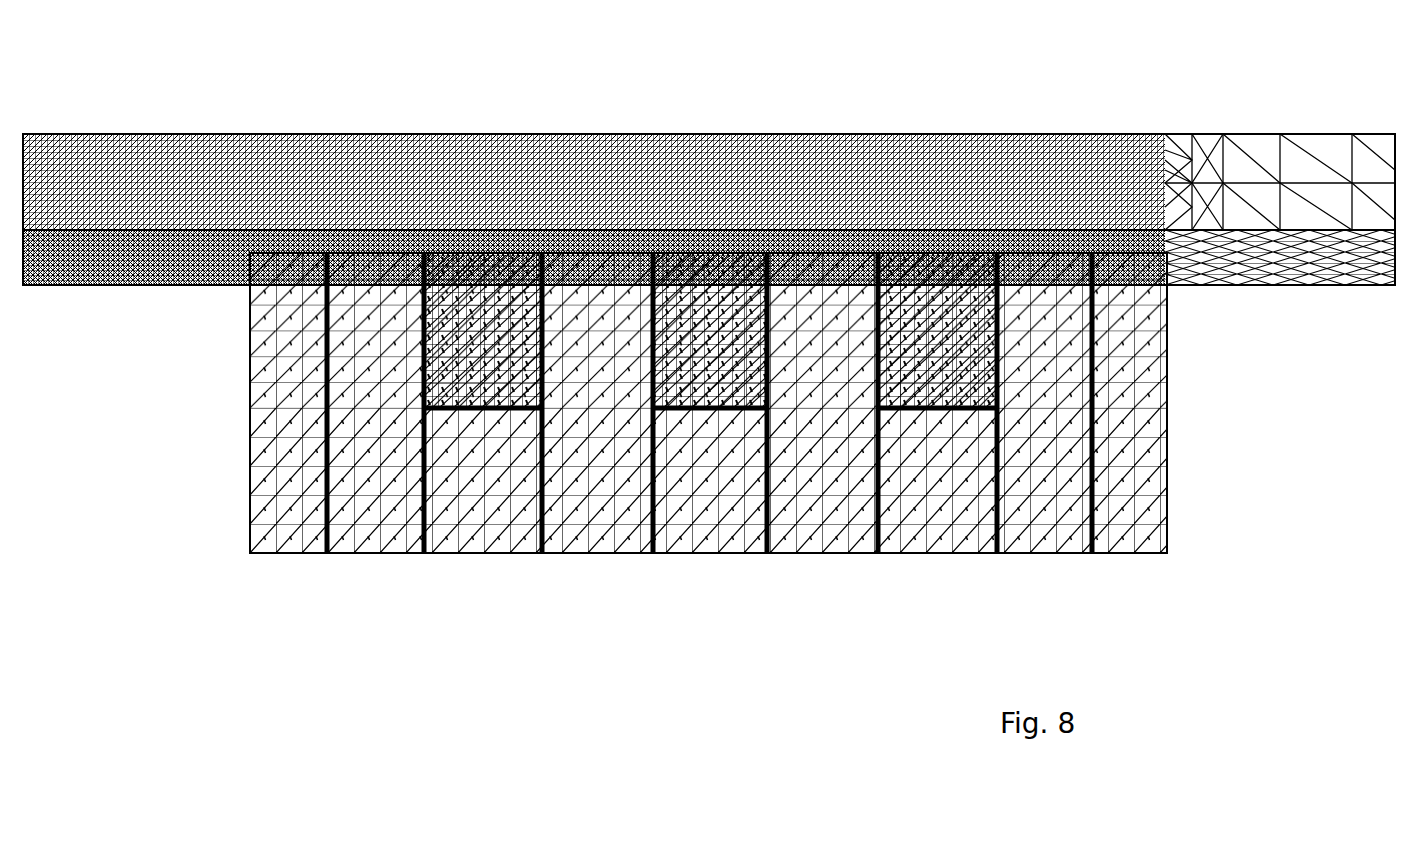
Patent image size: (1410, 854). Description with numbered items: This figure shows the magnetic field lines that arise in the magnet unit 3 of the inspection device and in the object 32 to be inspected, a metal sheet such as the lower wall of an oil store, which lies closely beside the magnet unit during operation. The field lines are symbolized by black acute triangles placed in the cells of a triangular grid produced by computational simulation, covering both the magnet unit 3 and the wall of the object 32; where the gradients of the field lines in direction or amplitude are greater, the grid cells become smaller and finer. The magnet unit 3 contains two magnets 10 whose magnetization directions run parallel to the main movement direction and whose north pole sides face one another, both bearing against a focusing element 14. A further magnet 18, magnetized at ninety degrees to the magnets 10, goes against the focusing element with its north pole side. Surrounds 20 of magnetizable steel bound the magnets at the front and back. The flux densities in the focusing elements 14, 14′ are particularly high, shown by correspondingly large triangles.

The magnet unit 3 is at (782, 617).
The magnet 10 is at (352, 553).
The focusing element 14 is at (485, 408).
The focusing element 14′ is at (697, 355).
The further magnet 18 is at (498, 524).
The surround 20 is at (1147, 495).
The object to be inspected 32 is at (1305, 172).